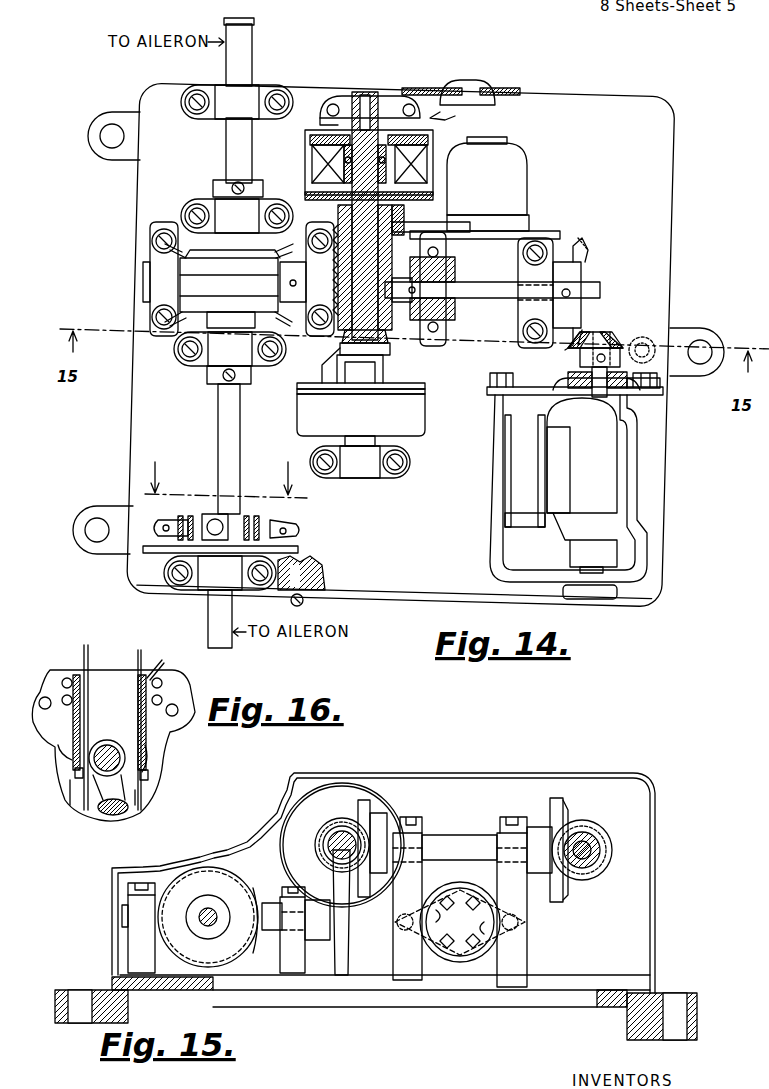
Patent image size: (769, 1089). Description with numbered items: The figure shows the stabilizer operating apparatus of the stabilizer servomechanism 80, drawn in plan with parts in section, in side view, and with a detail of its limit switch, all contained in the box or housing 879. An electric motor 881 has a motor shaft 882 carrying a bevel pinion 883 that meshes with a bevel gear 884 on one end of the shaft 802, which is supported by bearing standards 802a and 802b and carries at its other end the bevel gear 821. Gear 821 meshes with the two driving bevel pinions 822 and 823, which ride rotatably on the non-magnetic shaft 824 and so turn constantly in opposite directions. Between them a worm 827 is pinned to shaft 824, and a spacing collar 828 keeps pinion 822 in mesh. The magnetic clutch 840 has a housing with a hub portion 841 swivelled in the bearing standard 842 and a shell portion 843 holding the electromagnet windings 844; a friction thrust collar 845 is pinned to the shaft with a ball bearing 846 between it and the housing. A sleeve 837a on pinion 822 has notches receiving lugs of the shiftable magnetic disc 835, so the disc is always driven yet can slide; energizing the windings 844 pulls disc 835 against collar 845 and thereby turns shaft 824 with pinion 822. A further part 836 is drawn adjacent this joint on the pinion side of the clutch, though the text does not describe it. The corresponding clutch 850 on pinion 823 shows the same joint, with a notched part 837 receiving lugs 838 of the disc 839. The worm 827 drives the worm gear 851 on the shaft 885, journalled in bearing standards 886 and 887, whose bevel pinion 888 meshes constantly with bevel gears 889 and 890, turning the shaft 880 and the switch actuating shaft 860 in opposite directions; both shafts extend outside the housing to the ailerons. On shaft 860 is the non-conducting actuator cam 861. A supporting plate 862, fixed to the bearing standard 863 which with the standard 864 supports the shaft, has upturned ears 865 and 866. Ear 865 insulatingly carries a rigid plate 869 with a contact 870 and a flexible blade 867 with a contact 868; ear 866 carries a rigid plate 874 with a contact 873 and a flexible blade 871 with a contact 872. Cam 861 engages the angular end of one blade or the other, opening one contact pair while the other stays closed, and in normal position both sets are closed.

In FIG. 14, the stabilizer servomechanism 80 is at (398, 345).
In FIG. 15, the stabilizer servomechanism 80 is at (385, 949).
In FIG. 14, the shaft 802 is at (505, 298).
In FIG. 15, the shaft 802 is at (476, 845).
In FIG. 14, the bearing standard 802a is at (440, 268).
In FIG. 15, the bearing standard 802a is at (415, 975).
In FIG. 14, the bearing standard 802b is at (548, 263).
In FIG. 15, the bearing standard 802b is at (520, 953).
In FIG. 14, the bevel gear 821 is at (380, 323).
In FIG. 15, the bevel gear 821 is at (370, 805).
In FIG. 14, the driving bevel pinion 822 is at (431, 231).
In FIG. 14, the driving bevel pinion 823 is at (384, 348).
In FIG. 14, the shaft 824 is at (368, 108).
In FIG. 15, the shaft 824 is at (330, 852).
In FIG. 14, the worm 827 is at (432, 288).
In FIG. 15, the worm 827 is at (318, 835).
In FIG. 14, the spacing collar 828 is at (238, 279).
In FIG. 14, the magnetic disc 835 is at (306, 196).
In FIG. 14, the bushing 836 is at (411, 218).
In FIG. 14, the part 837 is at (321, 380).
In FIG. 14, the sleeve 837a is at (340, 218).
In FIG. 14, the lugs 838 is at (362, 378).
In FIG. 14, the disc 839 is at (426, 390).
In FIG. 14, the magnetic clutch 840 is at (360, 155).
In FIG. 14, the hub portion 841 is at (350, 105).
In FIG. 14, the bearing standard 842 is at (330, 102).
In FIG. 14, the shell portion 843 is at (310, 140).
In FIG. 14, the electromagnet windings 844 is at (318, 162).
In FIG. 14, the friction thrust collar 845 is at (346, 170).
In FIG. 14, the ball bearing 846 is at (461, 107).
In FIG. 14, the clutch 850 is at (410, 415).
In FIG. 15, the worm gear 851 is at (340, 935).
In FIG. 14, the switch actuating shaft 860 is at (228, 462).
In FIG. 16, the switch actuating shaft 860 is at (107, 742).
In FIG. 15, the switch actuating shaft 860 is at (212, 924).
In FIG. 14, the actuator cam 861 is at (232, 522).
In FIG. 16, the actuator cam 861 is at (110, 814).
In FIG. 14, the supporting plate 862 is at (298, 550).
In FIG. 16, the supporting plate 862 is at (170, 695).
In FIG. 14, the bearing standard 863 is at (222, 576).
In FIG. 14, the bearing standard 864 is at (215, 350).
In FIG. 16, the upturned ear 865 is at (80, 700).
In FIG. 16, the upturned ear 866 is at (140, 700).
In FIG. 14, the flexible blade 867 is at (297, 528).
In FIG. 16, the flexible blade 867 is at (58, 748).
In FIG. 16, the contact 868 is at (75, 772).
In FIG. 16, the rigid plate 869 is at (86, 645).
In FIG. 16, the contact 870 is at (78, 782).
In FIG. 14, the flexible blade 871 is at (170, 522).
In FIG. 16, the flexible blade 871 is at (150, 758).
In FIG. 16, the contact 872 is at (150, 776).
In FIG. 16, the contact 873 is at (140, 796).
In FIG. 16, the rigid plate 874 is at (142, 660).
In FIG. 14, the housing 879 is at (135, 584).
In FIG. 15, the housing 879 is at (655, 800).
In FIG. 14, the shaft 880 is at (228, 150).
In FIG. 14, the electric motor 881 is at (575, 486).
In FIG. 14, the motor shaft 882 is at (600, 396).
In FIG. 15, the motor shaft 882 is at (598, 850).
In FIG. 14, the bevel pinion 883 is at (618, 340).
In FIG. 15, the bevel pinion 883 is at (596, 832).
In FIG. 14, the bevel gear 884 is at (574, 340).
In FIG. 15, the bevel gear 884 is at (565, 806).
In FIG. 14, the shaft 885 is at (244, 290).
In FIG. 15, the shaft 885 is at (295, 925).
In FIG. 15, the bearing standard 886 is at (128, 935).
In FIG. 15, the bearing standard 887 is at (290, 945).
In FIG. 14, the bevel pinion 888 is at (288, 262).
In FIG. 15, the bevel pinion 888 is at (256, 895).
In FIG. 14, the bevel gear 889 is at (248, 258).
In FIG. 14, the bevel gear 890 is at (228, 282).
In FIG. 15, the bevel gear 890 is at (195, 946).